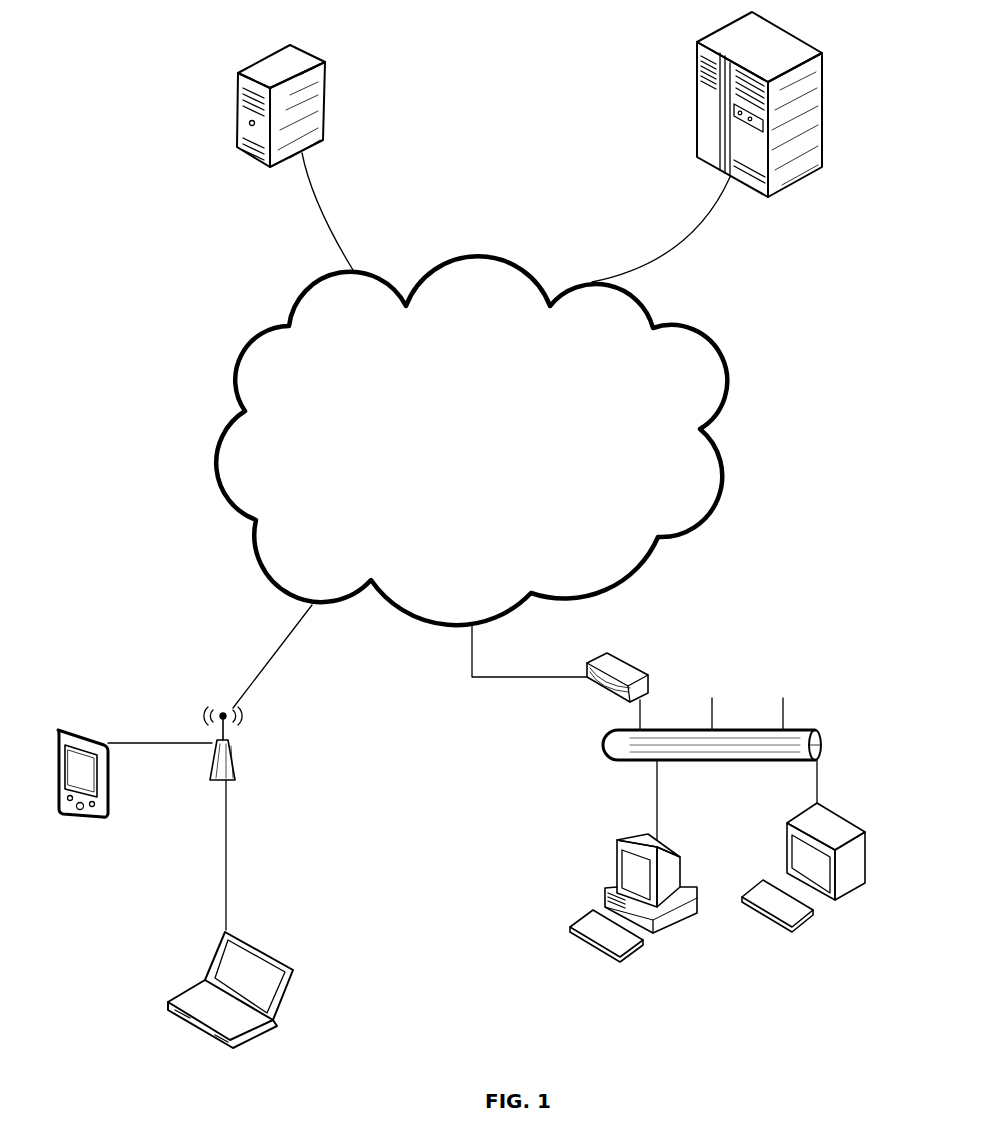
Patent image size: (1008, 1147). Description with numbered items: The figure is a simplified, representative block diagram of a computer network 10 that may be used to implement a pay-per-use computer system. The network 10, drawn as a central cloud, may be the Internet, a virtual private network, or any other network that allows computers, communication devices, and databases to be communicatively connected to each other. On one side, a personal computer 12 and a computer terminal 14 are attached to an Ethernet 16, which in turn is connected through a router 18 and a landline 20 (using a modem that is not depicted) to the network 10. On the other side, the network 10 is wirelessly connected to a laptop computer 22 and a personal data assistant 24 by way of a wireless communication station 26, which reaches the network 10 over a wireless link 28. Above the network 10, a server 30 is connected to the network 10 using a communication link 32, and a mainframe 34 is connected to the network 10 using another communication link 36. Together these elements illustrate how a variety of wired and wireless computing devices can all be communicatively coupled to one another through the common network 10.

The network 10 is at (185, 332).
The personal computer 12 is at (610, 882).
The computer terminal 14 is at (850, 825).
The Ethernet 16 is at (813, 728).
The router 18 is at (650, 675).
The landline 20 is at (510, 678).
The laptop computer 22 is at (250, 1040).
The personal data assistant 24 is at (85, 730).
The wireless communication station 26 is at (240, 773).
The wireless link 28 is at (267, 665).
The server 30 is at (327, 107).
The communication link 32 is at (332, 247).
The mainframe 34 is at (783, 190).
The communication link 36 is at (700, 232).